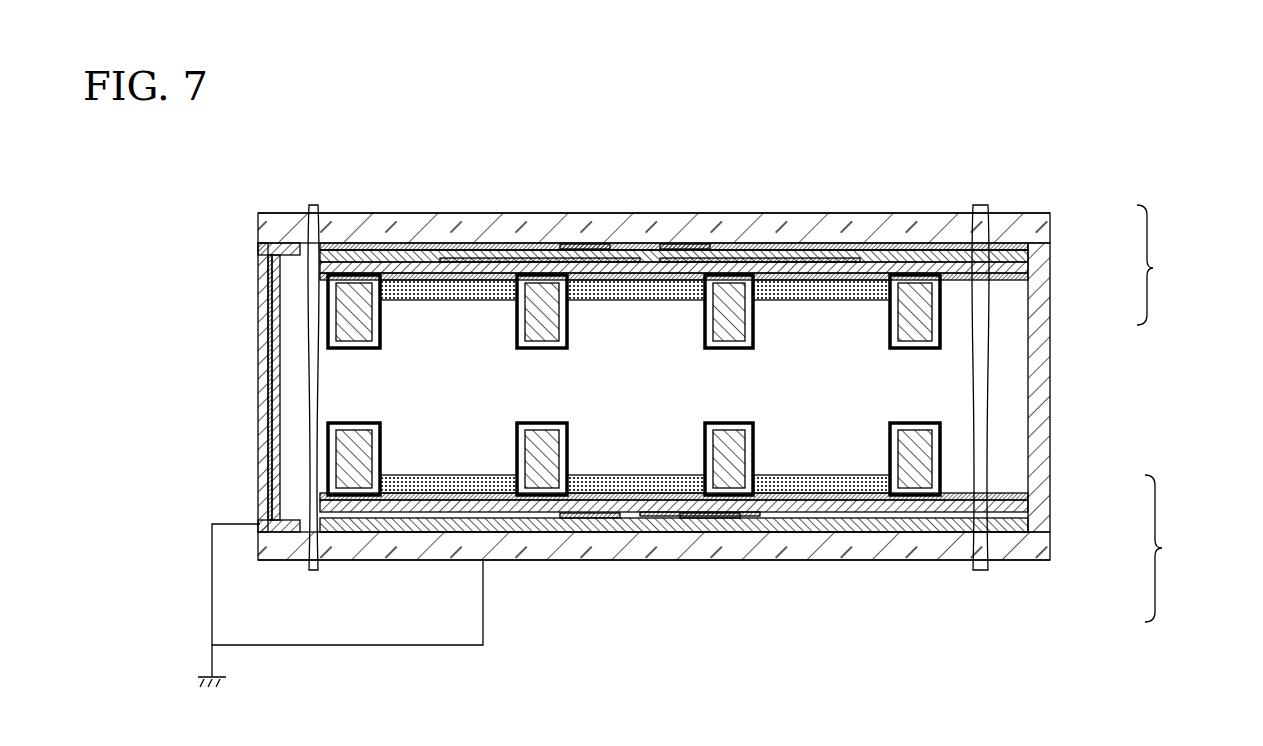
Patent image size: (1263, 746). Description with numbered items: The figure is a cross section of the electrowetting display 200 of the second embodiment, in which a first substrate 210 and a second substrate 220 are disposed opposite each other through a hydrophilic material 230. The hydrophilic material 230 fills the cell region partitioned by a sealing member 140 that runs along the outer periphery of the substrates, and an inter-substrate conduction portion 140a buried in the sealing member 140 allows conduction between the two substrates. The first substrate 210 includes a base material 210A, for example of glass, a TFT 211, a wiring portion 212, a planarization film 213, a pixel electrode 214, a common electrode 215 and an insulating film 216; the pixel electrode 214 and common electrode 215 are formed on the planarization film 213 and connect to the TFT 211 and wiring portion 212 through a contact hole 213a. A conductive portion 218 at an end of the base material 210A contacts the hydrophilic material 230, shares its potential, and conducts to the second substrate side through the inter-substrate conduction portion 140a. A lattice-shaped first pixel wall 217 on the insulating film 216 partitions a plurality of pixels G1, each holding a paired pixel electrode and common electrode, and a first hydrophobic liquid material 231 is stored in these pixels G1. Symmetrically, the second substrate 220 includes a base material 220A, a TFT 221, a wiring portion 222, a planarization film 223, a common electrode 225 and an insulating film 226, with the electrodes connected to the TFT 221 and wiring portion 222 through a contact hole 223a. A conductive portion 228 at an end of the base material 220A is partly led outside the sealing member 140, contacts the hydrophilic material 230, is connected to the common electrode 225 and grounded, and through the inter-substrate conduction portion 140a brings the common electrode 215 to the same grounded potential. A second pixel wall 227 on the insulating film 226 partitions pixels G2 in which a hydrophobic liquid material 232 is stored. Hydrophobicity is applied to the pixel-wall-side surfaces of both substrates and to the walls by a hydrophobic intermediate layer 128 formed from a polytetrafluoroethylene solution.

The electrowetting display 200 is at (932, 78).
The first substrate 210 is at (1168, 265).
The base material 210A is at (1028, 230).
The TFT 211 is at (747, 238).
The wiring portion 212 is at (785, 247).
The planarization film 213 is at (1030, 250).
The contact hole 213a is at (587, 250).
The pixel electrode 214 is at (629, 262).
The common electrode 215 is at (667, 262).
The insulating film 216 is at (1028, 266).
The first pixel wall 217 is at (923, 322).
The conductive portion 218 is at (258, 246).
The hydrophobic intermediate layer 128 is at (1028, 278).
The second substrate 220 is at (1175, 548).
The base material 220A is at (1025, 555).
The TFT 221 is at (742, 528).
The wiring portion 222 is at (795, 530).
The planarization film 223 is at (1025, 524).
The contact hole 223a is at (690, 518).
The common electrode 225 is at (705, 514).
The insulating film 226 is at (1025, 508).
The second pixel wall 227 is at (923, 452).
The conductive portion 228 is at (283, 532).
The hydrophilic material 230 is at (395, 327).
The first hydrophobic liquid material 231 is at (860, 282).
The hydrophobic liquid material 232 is at (864, 500).
The sealing member 140 is at (258, 450).
The inter-substrate conduction portion 140a is at (270, 310).
The pixel G1 is at (435, 318).
The pixel G2 is at (433, 450).